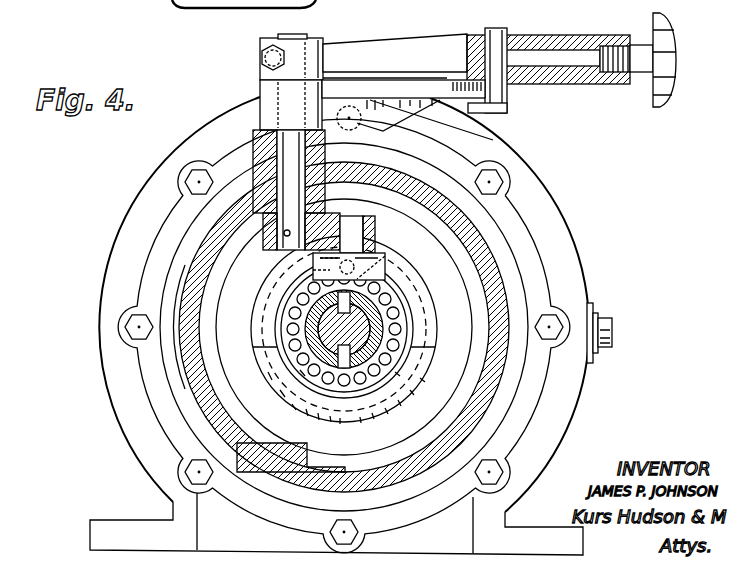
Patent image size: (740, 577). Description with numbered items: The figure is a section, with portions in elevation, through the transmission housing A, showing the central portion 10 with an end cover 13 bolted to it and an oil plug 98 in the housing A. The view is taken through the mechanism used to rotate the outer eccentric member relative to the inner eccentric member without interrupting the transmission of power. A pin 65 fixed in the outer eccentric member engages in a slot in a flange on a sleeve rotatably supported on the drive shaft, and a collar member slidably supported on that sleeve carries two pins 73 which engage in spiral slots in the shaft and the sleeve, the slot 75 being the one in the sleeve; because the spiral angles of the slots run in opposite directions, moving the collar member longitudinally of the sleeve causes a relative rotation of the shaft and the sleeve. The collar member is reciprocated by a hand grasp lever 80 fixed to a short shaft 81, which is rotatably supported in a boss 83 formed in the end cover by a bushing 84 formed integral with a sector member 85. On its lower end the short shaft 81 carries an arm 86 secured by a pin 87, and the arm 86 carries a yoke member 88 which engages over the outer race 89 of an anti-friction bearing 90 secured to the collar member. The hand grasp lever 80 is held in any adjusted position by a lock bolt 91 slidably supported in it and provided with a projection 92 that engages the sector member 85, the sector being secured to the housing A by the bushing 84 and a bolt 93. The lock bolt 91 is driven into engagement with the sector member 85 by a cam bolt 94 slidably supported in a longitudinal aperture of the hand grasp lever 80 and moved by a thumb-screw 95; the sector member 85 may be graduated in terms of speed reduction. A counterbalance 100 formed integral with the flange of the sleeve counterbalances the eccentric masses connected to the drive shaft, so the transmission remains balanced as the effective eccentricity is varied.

The central portion 10 is at (300, 8).
The end cover 13 is at (252, 436).
The pin 65 is at (358, 270).
The pins 73 is at (362, 301).
The spiral slot 75 is at (99, 341).
The hand grasp lever 80 is at (427, 35).
The short shaft 81 is at (288, 156).
The boss 83 is at (253, 140).
The bushing 84 is at (252, 140).
The sector member 85 is at (456, 99).
The arm 86 is at (302, 254).
The pin 87 is at (267, 253).
The yoke member 88 is at (385, 268).
The outer race 89 is at (288, 300).
The anti-friction bearing 90 is at (397, 329).
The lock bolt 91 is at (503, 96).
The projection 92 is at (486, 108).
The bolt 93 is at (372, 122).
The cam bolt 94 is at (541, 50).
The thumb-screw 95 is at (664, 25).
The oil plug 98 is at (612, 322).
The counterbalance 100 is at (383, 405).
The housing A is at (555, 227).